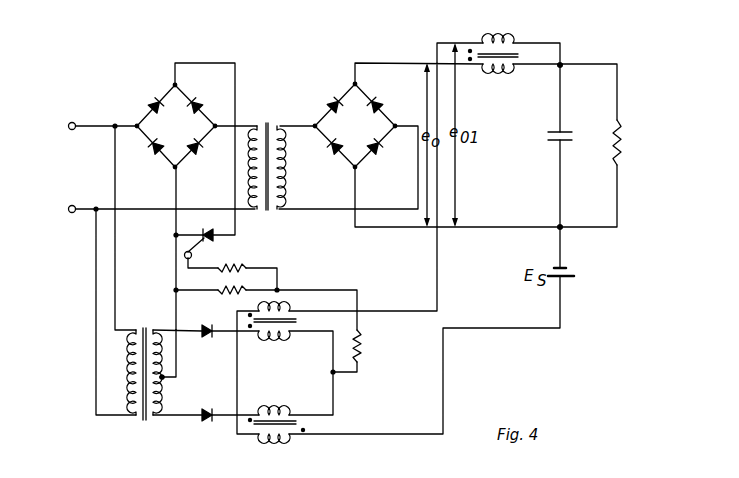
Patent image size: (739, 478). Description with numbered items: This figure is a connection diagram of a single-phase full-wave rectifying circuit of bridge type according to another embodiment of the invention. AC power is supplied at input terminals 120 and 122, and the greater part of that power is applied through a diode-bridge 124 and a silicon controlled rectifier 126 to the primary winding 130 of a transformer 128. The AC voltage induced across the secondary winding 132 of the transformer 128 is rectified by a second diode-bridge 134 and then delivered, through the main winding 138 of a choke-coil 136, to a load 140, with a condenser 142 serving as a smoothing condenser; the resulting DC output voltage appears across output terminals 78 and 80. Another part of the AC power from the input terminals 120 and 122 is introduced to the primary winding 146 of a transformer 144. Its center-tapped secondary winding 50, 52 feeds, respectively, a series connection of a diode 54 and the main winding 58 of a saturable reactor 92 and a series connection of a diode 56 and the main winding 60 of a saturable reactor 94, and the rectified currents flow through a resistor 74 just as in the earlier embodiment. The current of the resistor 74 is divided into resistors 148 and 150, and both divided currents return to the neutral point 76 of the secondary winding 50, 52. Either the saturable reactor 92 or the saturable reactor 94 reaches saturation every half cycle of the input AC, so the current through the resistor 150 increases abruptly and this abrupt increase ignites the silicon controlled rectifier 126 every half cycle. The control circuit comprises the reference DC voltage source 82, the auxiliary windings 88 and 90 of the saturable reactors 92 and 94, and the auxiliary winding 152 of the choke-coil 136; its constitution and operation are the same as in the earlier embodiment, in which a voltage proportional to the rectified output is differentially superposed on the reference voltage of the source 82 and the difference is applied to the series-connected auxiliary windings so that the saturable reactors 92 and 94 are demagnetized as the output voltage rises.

The input terminal 120 is at (72, 122).
The input terminal 122 is at (72, 205).
The diode-bridge 124 is at (171, 122).
The silicon controlled rectifier 126 is at (207, 229).
The transformer 128 is at (268, 120).
The primary winding 130 is at (253, 170).
The secondary winding 132 is at (283, 166).
The diode-bridge 134 is at (352, 106).
The choke-coil 136 is at (520, 56).
The main winding 138 is at (490, 72).
The auxiliary winding 152 is at (492, 40).
The output terminal 78 is at (563, 63).
The output terminal 80 is at (559, 226).
The reference DC voltage source 82 is at (576, 273).
The load 140 is at (622, 141).
The condenser 142 is at (546, 137).
The transformer 144 is at (146, 426).
The primary winding 146 is at (131, 373).
The secondary winding 50 is at (159, 337).
The secondary winding 52 is at (159, 408).
The diode 54 is at (206, 339).
The diode 56 is at (207, 424).
The main winding 58 is at (270, 335).
The main winding 60 is at (284, 410).
The resistor 74 is at (363, 348).
The neutral point 76 is at (166, 380).
The auxiliary winding 88 is at (283, 308).
The auxiliary winding 90 is at (275, 440).
The saturable reactor 92 is at (298, 322).
The saturable reactor 94 is at (306, 428).
The resistor 148 is at (233, 296).
The resistor 150 is at (240, 266).